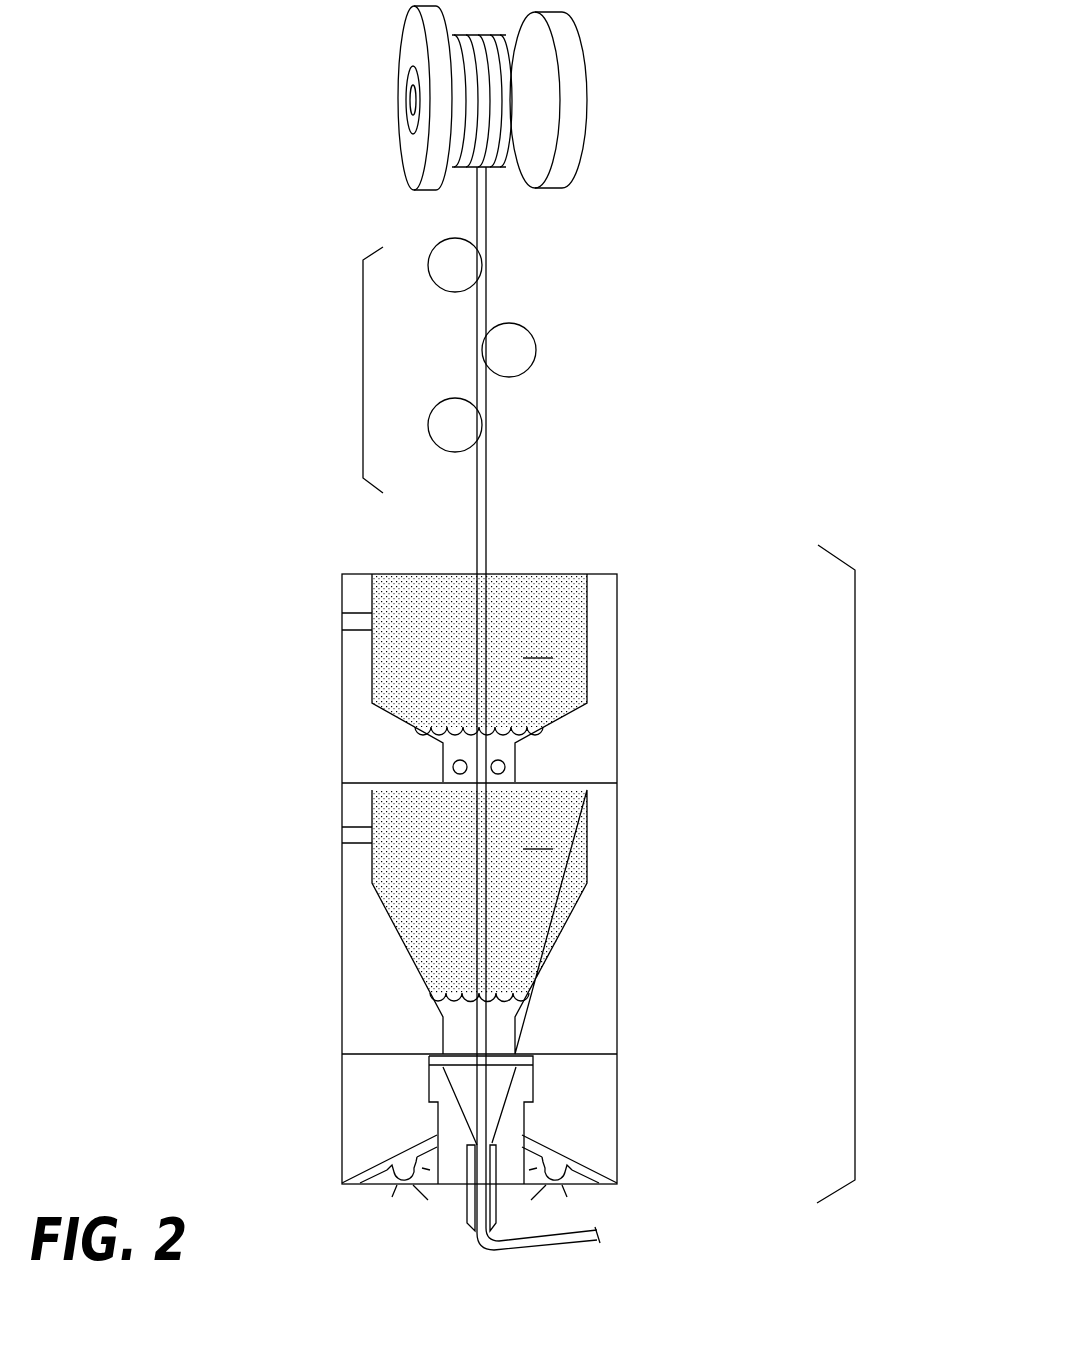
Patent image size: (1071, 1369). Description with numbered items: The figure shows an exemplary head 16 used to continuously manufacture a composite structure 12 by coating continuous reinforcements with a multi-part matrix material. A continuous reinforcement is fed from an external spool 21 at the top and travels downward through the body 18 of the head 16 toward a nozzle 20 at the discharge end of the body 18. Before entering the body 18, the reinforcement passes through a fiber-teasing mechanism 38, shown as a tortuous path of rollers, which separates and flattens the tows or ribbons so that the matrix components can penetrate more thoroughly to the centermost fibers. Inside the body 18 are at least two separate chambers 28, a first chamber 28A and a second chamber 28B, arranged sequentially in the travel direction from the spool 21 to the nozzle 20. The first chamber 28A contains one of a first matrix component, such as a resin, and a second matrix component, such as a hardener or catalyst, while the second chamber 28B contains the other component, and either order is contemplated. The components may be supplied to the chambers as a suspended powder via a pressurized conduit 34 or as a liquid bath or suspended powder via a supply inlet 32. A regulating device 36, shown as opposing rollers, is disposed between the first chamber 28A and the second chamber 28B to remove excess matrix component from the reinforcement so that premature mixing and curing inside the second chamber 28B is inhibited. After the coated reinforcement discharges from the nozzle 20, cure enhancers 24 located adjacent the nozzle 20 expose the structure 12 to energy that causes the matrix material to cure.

The composite structure 12 is at (485, 1248).
The head 16 is at (855, 852).
The body 18 is at (202, 792).
The nozzle 20 is at (492, 1195).
The external spool 21 is at (583, 160).
The cure enhancer 24 is at (393, 1187).
The chambers 28 is at (552, 814).
The first chamber 28A is at (479, 678).
The second chamber 28B is at (479, 922).
The supply inlet 32 is at (350, 836).
The pressurized conduit 34 is at (350, 623).
The regulating device 36 is at (507, 763).
The fiber-teasing mechanism 38 is at (363, 367).